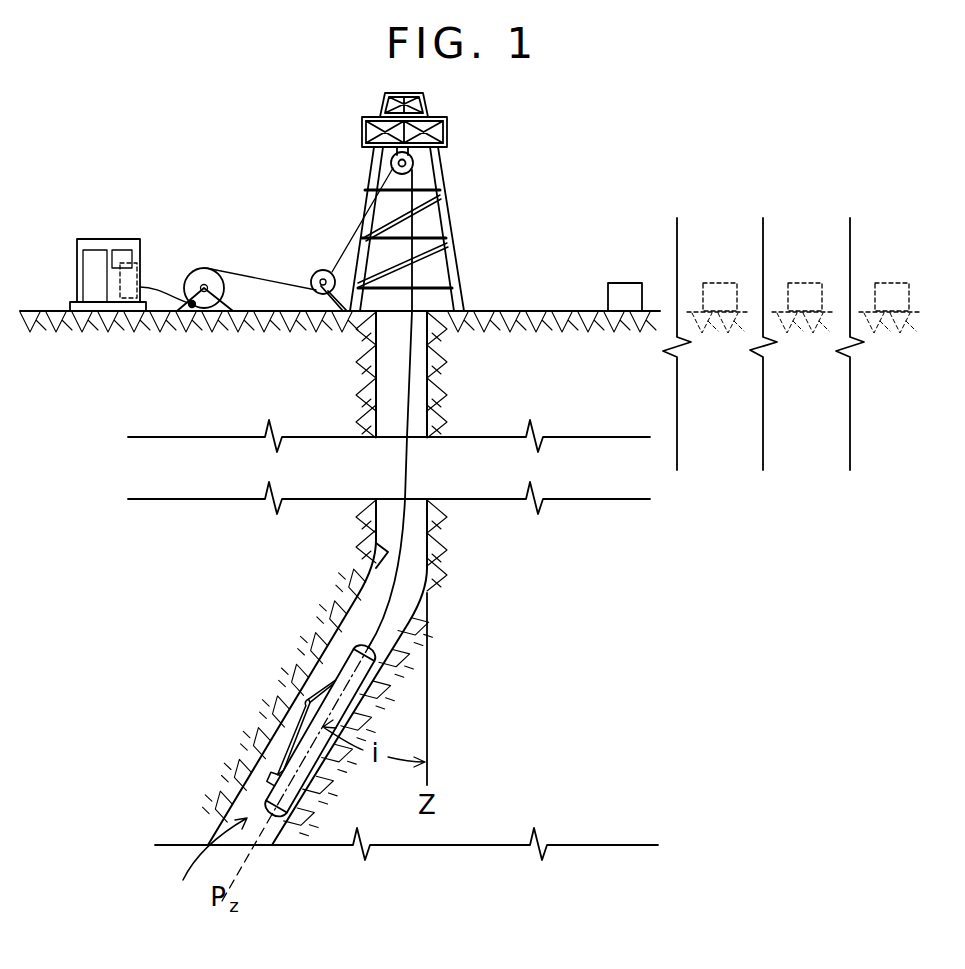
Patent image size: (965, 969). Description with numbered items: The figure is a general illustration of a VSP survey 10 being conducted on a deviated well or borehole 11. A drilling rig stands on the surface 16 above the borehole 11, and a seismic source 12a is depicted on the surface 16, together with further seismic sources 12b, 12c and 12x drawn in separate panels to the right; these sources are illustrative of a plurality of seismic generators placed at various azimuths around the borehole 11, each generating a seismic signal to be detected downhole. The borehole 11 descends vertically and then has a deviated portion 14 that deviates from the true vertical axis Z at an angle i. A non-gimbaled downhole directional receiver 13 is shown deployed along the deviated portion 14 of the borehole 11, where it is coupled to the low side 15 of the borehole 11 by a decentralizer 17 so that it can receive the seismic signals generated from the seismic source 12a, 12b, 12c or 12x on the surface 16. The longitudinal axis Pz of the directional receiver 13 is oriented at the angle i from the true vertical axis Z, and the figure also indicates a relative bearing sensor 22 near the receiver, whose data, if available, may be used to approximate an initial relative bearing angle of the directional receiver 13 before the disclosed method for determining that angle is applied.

The VSP survey 10 is at (593, 160).
The borehole 11 is at (426, 391).
The seismic source 12a is at (628, 283).
The seismic source 12b is at (720, 283).
The seismic source 12c is at (806, 283).
The seismic source 12x is at (893, 283).
The directional receiver 13 is at (378, 652).
The deviated portion 14 is at (196, 858).
The low side 15 is at (405, 601).
The surface 16 is at (541, 311).
The decentralizer 17 is at (275, 729).
The relative bearing sensor 22 is at (275, 779).